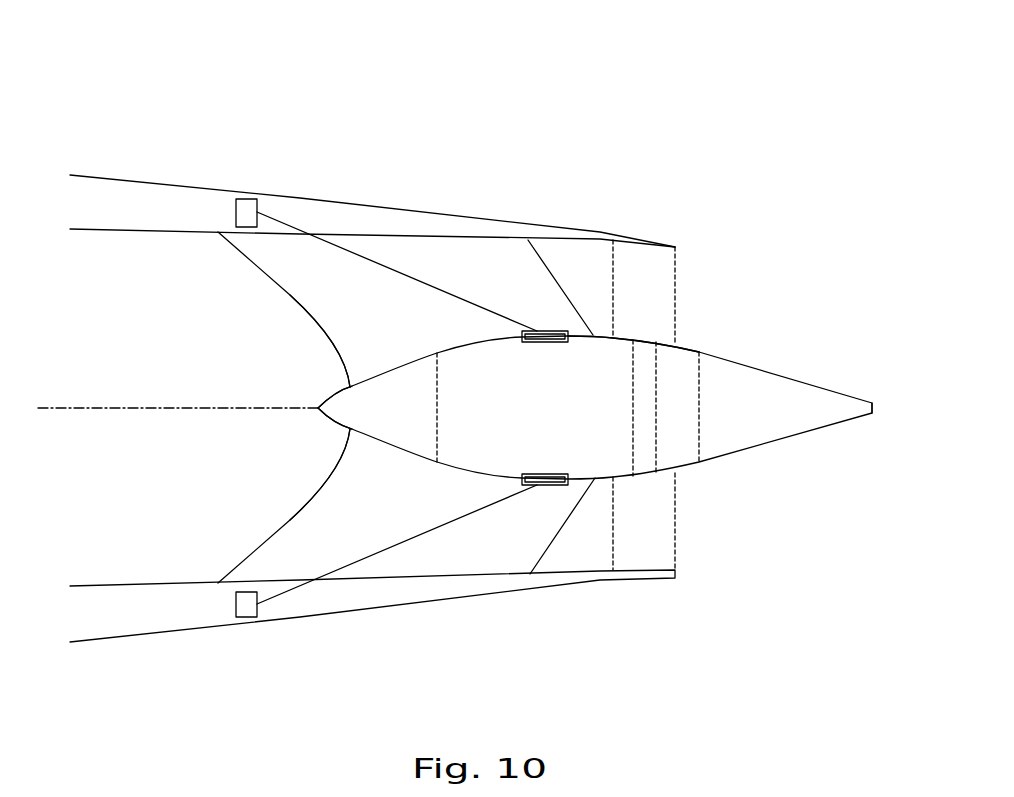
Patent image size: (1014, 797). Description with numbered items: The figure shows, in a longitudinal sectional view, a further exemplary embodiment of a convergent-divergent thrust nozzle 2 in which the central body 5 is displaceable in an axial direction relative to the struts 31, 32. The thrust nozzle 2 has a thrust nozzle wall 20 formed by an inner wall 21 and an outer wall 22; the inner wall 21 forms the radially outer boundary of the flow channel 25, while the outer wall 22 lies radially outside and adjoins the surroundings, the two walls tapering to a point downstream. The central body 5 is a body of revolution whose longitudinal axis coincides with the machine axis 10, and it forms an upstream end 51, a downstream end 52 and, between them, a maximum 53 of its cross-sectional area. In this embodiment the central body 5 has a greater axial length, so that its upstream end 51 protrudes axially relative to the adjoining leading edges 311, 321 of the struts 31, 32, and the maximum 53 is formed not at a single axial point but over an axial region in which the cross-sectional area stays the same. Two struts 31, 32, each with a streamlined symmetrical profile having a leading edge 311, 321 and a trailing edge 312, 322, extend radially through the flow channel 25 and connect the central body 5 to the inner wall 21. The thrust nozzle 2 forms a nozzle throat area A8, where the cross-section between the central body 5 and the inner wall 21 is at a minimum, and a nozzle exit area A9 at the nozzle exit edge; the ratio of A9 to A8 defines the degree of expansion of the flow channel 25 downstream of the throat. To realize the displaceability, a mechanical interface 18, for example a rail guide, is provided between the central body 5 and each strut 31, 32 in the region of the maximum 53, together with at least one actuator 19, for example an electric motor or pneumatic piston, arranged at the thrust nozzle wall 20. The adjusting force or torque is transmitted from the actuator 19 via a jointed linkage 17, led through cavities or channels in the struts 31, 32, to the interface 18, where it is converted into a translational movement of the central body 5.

The thrust nozzle 2 is at (448, 150).
The central body 5 is at (740, 437).
The machine axis 10 is at (108, 409).
The linkage 17 is at (437, 288).
The mechanical interface 18 is at (552, 328).
The actuator 19 is at (247, 199).
The thrust nozzle wall 20 is at (372, 202).
The inner wall 21 is at (120, 232).
The outer wall 22 is at (96, 175).
The flow channel 25 is at (159, 358).
The strut 31 is at (275, 257).
The strut 32 is at (267, 565).
The upstream end 51 is at (312, 411).
The downstream end 52 is at (873, 413).
The maximum of cross-sectional area 53 is at (613, 336).
The leading edge 311 is at (297, 302).
The trailing edge 312 is at (567, 295).
The leading edge 321 is at (293, 518).
The trailing edge 322 is at (568, 522).
The nozzle throat area A8 is at (613, 278).
The nozzle exit area A9 is at (676, 280).